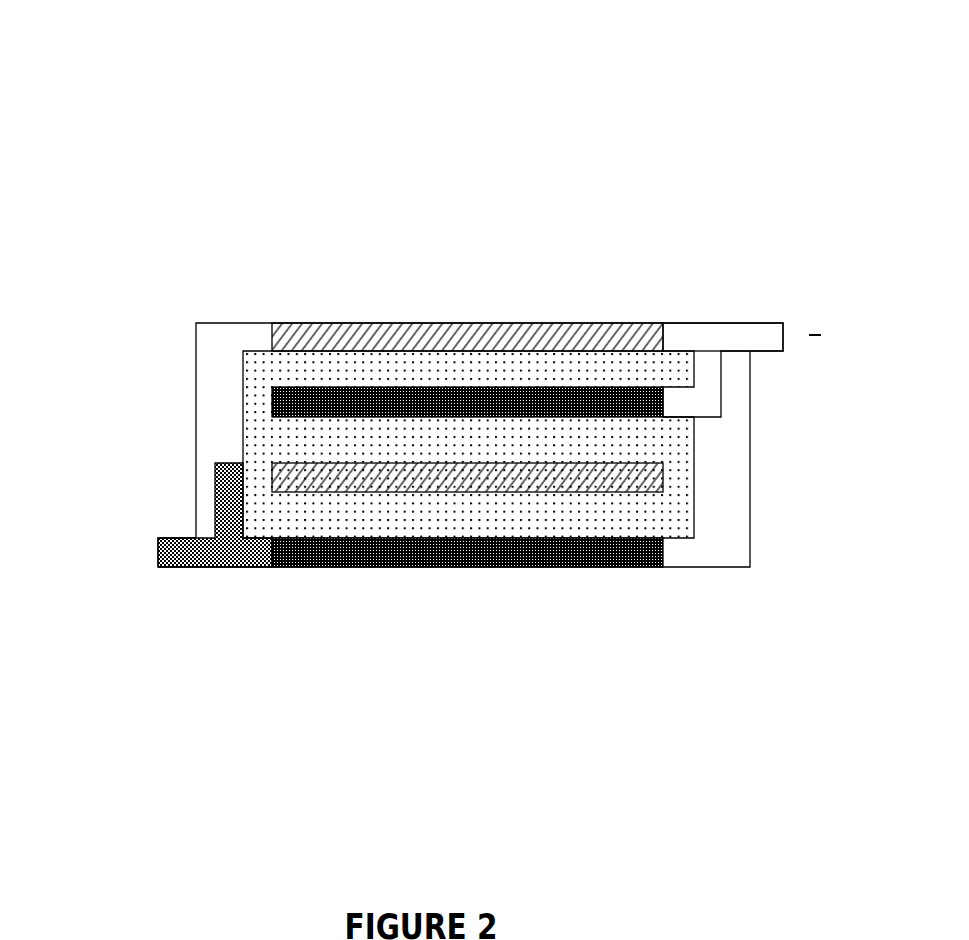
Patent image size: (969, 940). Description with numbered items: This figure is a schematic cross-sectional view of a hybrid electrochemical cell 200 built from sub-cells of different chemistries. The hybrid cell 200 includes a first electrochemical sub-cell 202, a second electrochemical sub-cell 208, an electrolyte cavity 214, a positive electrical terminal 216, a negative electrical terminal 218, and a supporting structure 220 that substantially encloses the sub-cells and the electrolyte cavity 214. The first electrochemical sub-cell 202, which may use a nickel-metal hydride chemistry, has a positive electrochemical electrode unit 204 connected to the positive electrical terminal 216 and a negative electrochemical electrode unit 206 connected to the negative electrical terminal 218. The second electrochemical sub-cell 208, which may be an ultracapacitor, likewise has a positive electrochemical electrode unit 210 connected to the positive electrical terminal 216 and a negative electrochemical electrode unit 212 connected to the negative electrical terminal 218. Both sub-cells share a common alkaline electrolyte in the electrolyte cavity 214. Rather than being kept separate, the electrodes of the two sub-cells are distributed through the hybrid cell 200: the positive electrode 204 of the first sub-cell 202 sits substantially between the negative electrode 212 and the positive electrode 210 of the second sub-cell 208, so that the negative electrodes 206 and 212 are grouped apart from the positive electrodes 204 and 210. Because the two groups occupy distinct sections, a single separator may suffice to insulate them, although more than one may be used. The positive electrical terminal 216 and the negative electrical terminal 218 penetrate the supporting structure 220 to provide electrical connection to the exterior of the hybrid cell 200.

The hybrid electrochemical cell 200 is at (92, 87).
The first electrochemical sub-cell 202 is at (358, 440).
The positive electrochemical electrode unit 204 is at (553, 482).
The negative electrochemical electrode unit 206 is at (422, 343).
The second electrochemical sub-cell 208 is at (568, 440).
The positive electrochemical electrode unit 210 is at (421, 557).
The negative electrochemical electrode unit 212 is at (571, 398).
The electrolyte cavity 214 is at (262, 368).
The positive electrical terminal 216 is at (234, 567).
The negative electrical terminal 218 is at (758, 323).
The supporting structure 220 is at (722, 528).